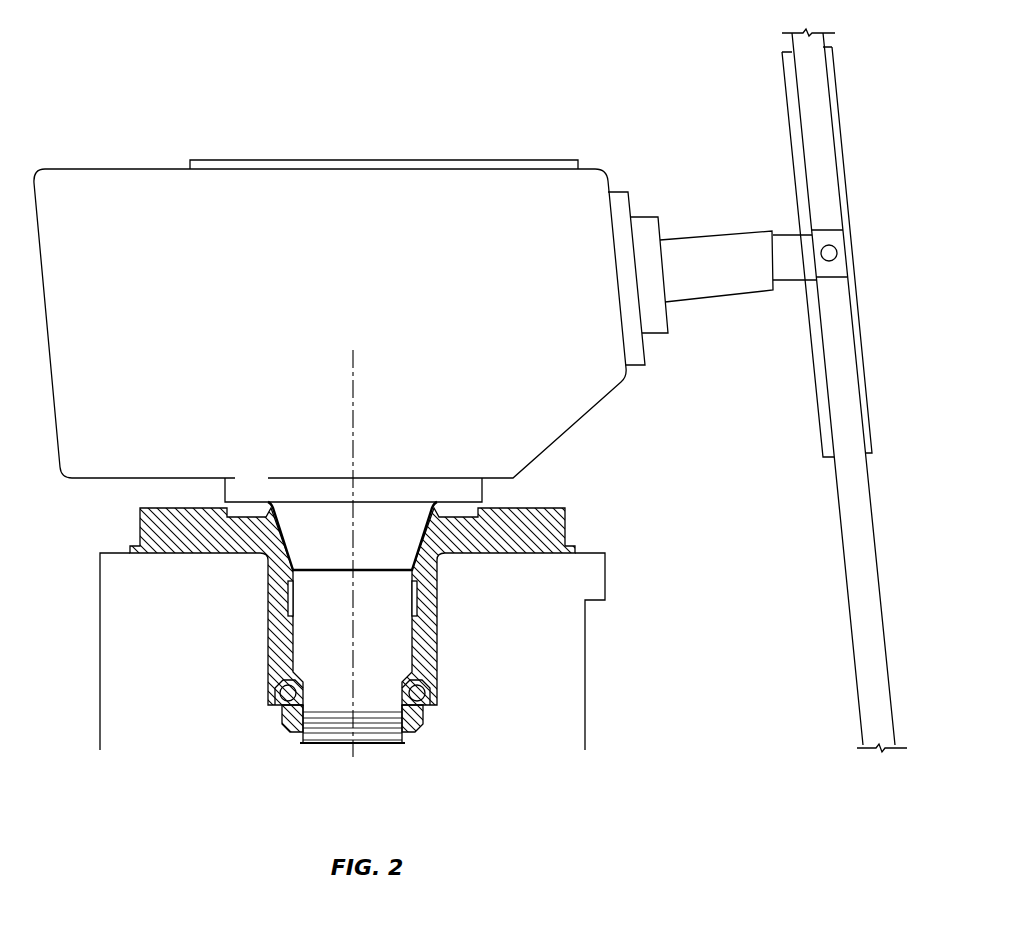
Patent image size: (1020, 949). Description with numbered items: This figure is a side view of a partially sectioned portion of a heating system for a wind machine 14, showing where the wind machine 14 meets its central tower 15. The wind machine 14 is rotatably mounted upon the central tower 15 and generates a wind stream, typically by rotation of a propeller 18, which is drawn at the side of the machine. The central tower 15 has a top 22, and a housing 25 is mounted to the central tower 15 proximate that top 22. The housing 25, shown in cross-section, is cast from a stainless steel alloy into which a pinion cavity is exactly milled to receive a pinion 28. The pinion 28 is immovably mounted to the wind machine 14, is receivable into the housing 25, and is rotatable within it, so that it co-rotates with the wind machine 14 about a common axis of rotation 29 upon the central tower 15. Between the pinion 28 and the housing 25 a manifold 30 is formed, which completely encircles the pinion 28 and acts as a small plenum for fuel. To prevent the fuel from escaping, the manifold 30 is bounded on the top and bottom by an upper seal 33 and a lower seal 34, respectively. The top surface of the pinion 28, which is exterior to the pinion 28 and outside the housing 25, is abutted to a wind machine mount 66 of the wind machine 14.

The wind machine 14 is at (515, 128).
The propeller 18 is at (852, 503).
The common axis of rotation 29 is at (355, 398).
The pinion 28 is at (378, 513).
The wind machine mount 66 is at (237, 479).
The top 22 is at (130, 562).
The housing 25 is at (532, 525).
The lower seal 34 is at (438, 633).
The manifold 30 is at (287, 607).
The upper seal 33 is at (416, 580).
The central tower 15 is at (132, 730).